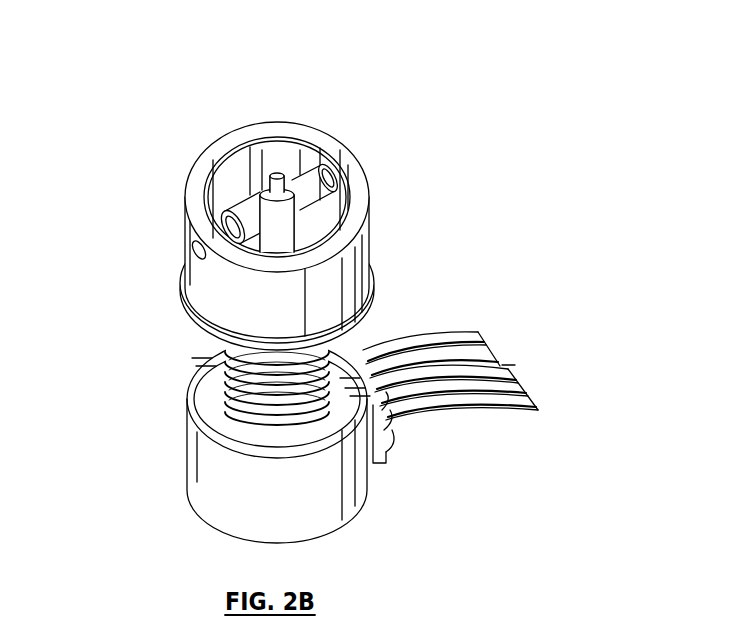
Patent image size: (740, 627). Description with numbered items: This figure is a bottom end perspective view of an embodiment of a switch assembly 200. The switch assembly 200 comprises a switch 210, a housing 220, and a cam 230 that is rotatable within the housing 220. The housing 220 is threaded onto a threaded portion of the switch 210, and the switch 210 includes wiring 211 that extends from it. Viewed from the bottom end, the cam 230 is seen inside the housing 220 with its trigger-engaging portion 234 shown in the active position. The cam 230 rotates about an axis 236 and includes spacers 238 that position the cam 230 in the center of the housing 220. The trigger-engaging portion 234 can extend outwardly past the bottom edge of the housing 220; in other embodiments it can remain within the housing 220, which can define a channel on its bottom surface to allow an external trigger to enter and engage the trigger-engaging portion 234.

The switch assembly 200 is at (290, 281).
The switch 210 is at (187, 492).
The wiring 211 is at (434, 319).
The housing 220 is at (391, 217).
The cam 230 is at (251, 157).
The trigger-engaging portion 234 is at (266, 189).
The axis 236 is at (183, 261).
The spacers 238 is at (218, 202).